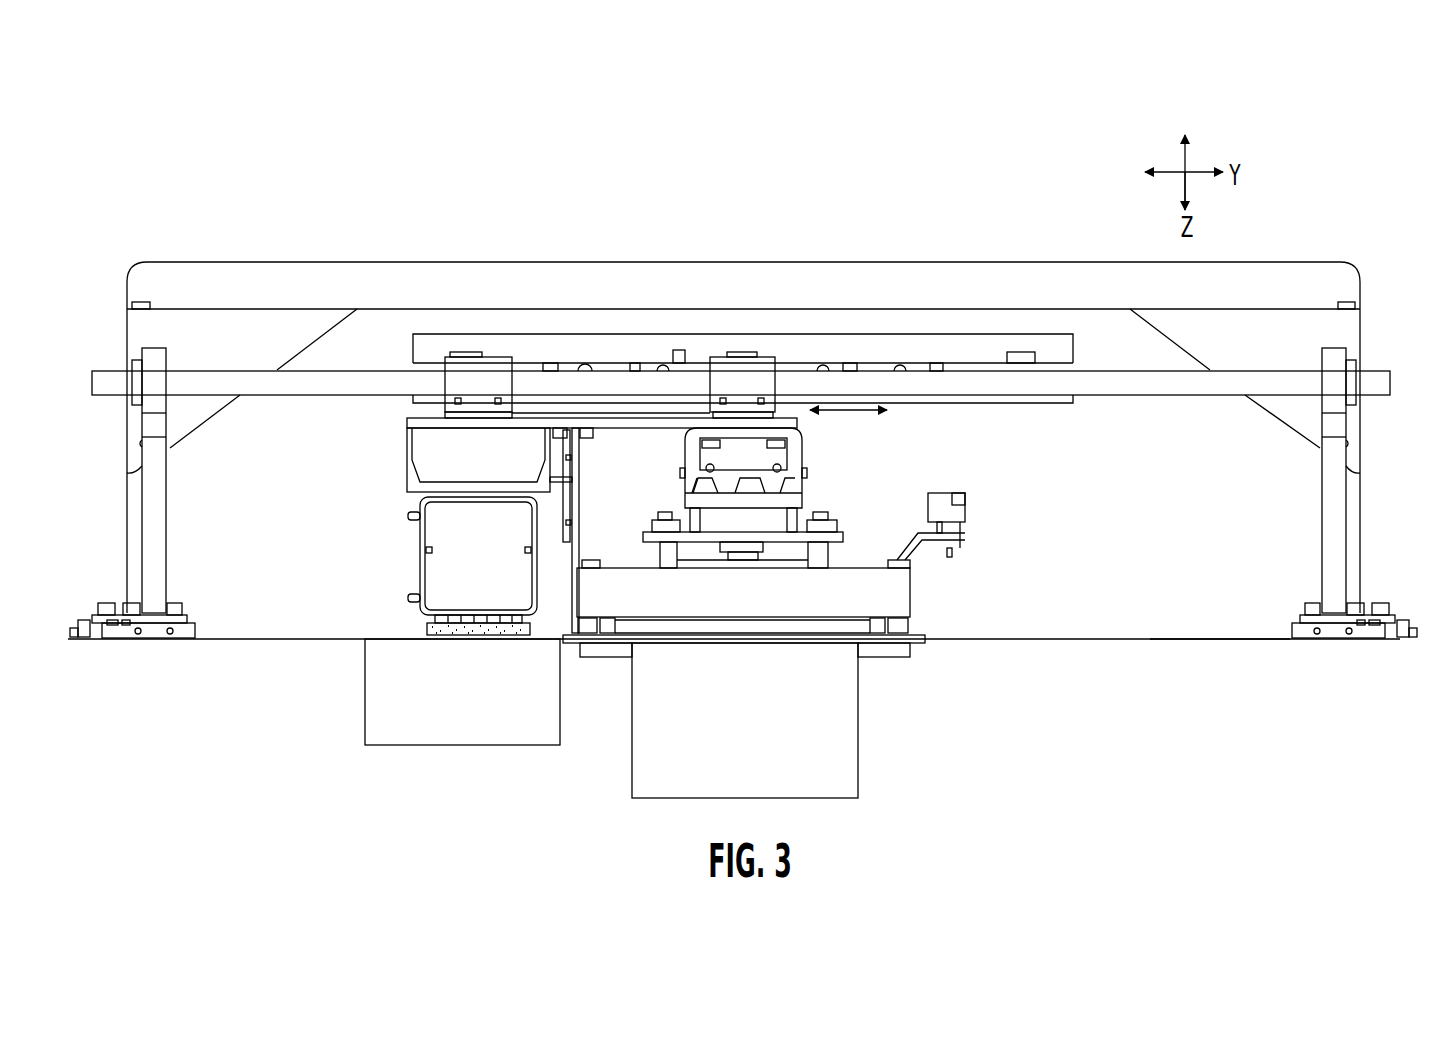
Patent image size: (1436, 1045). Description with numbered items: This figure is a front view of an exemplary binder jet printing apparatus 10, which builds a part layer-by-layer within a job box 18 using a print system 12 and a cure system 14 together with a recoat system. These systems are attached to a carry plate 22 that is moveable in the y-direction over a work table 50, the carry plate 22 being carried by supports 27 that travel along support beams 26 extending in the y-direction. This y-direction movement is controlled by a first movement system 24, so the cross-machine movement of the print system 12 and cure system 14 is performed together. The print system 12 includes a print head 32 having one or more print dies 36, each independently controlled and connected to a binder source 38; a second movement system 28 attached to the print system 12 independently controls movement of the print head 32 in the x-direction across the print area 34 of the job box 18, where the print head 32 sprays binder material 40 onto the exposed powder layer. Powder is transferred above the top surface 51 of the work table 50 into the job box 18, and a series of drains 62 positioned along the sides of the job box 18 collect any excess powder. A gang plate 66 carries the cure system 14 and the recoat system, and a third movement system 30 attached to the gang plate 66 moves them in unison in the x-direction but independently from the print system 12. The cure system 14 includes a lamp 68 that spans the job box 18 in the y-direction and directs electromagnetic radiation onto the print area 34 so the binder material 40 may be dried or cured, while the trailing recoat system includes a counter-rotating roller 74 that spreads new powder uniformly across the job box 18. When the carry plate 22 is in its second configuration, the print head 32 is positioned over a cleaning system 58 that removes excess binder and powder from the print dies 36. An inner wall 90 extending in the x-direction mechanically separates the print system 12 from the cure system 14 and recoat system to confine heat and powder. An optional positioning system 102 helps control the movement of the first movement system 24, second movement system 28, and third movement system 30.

The binder jet printing apparatus 10 is at (507, 130).
The print system 12 is at (383, 563).
The cure system 14 is at (935, 598).
The job box 18 is at (732, 735).
The carry plate 22 is at (638, 418).
The first movement system 24 is at (1058, 238).
The support beams 26 is at (212, 383).
The supports 27 is at (490, 383).
The second movement system 28 is at (370, 443).
The third movement system 30 is at (812, 443).
The print head 32 is at (465, 575).
The print area 34 is at (507, 648).
The print dies 36 is at (435, 622).
The binder source 38 is at (465, 472).
The binder material 40 is at (450, 627).
The work table 50 is at (1173, 640).
The top surface 51 is at (1240, 638).
The cleaning system 58 is at (449, 712).
The drains 62 is at (597, 650).
The gang plate 66 is at (803, 532).
The lamp 68 is at (727, 612).
The roller 74 is at (827, 623).
The inner wall 90 is at (577, 550).
The positioning system 102 is at (980, 487).